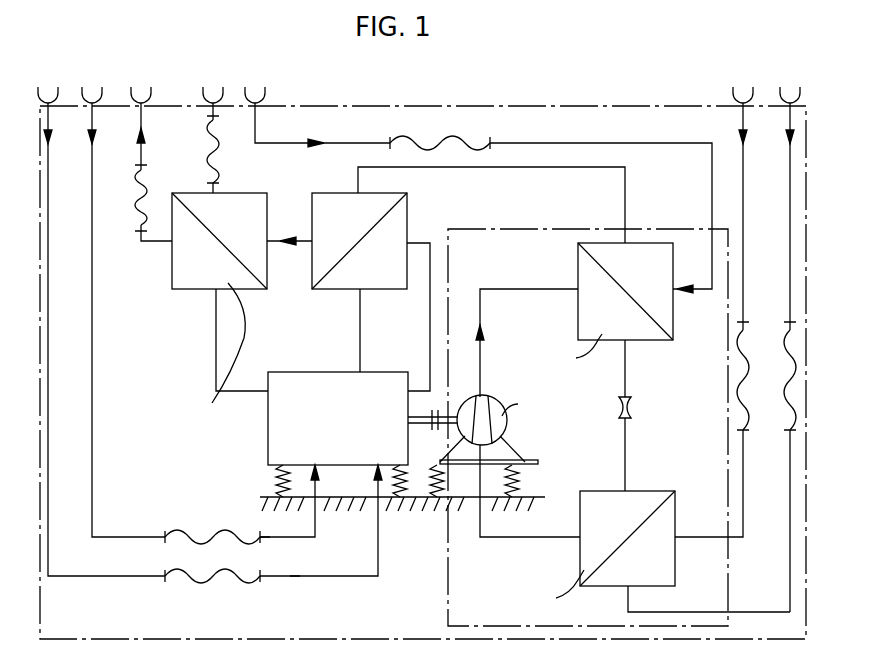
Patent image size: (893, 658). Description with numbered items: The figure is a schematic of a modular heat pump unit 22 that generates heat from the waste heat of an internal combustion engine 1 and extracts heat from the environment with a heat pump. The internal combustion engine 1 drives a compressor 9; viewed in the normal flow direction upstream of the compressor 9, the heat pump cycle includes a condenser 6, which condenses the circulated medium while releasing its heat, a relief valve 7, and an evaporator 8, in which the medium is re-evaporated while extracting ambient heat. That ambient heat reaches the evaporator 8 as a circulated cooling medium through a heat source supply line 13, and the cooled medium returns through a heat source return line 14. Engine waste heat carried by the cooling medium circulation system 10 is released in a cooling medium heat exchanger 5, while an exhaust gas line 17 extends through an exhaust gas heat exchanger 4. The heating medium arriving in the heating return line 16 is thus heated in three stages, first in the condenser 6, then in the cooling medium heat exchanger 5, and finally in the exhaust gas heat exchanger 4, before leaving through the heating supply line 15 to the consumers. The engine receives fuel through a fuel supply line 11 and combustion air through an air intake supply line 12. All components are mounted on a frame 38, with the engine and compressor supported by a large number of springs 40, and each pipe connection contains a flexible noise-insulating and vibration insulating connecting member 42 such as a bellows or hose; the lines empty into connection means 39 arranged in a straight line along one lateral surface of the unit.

The internal combustion engine 1 is at (312, 372).
The exhaust gas heat exchanger 4 is at (243, 194).
The cooling medium heat exchanger 5 is at (405, 221).
The condenser 6 is at (673, 312).
The relief valve 7 is at (633, 410).
The evaporator 8 is at (642, 491).
The compressor 9 is at (510, 420).
The cooling medium circulation system 10 is at (430, 334).
The fuel supply line 11 is at (93, 363).
The air intake supply line 12 is at (49, 431).
The heat source supply line 13 is at (743, 192).
The heat source return line 14 is at (790, 254).
The heating supply line 15 is at (213, 110).
The heating return line 16 is at (268, 140).
The exhaust gas line 17 is at (141, 165).
The heat pump unit 22 is at (387, 96).
The frame 38 is at (262, 502).
The connection means 39 is at (50, 96).
The springs 40 is at (274, 484).
The flexible noise-insulating and vibration insulating connecting member 42 is at (213, 122).